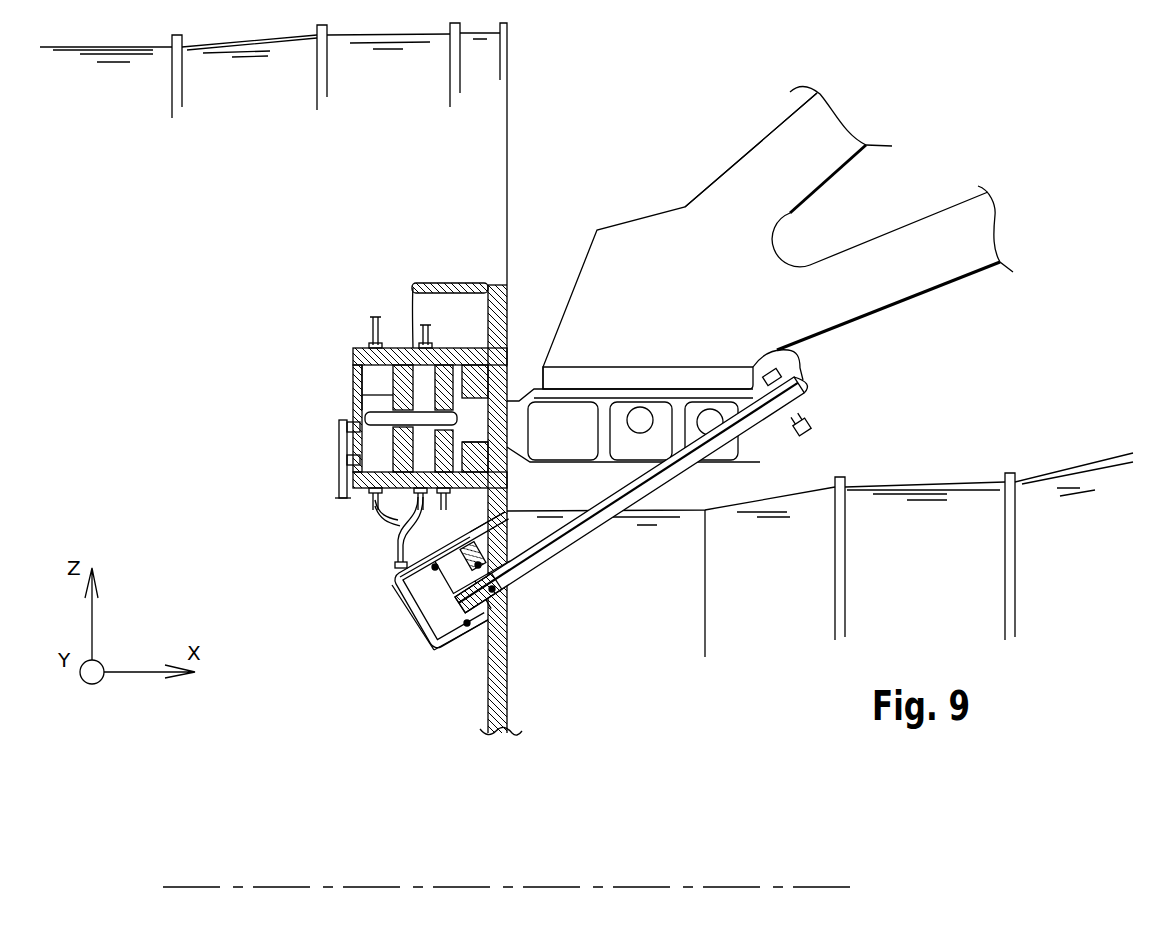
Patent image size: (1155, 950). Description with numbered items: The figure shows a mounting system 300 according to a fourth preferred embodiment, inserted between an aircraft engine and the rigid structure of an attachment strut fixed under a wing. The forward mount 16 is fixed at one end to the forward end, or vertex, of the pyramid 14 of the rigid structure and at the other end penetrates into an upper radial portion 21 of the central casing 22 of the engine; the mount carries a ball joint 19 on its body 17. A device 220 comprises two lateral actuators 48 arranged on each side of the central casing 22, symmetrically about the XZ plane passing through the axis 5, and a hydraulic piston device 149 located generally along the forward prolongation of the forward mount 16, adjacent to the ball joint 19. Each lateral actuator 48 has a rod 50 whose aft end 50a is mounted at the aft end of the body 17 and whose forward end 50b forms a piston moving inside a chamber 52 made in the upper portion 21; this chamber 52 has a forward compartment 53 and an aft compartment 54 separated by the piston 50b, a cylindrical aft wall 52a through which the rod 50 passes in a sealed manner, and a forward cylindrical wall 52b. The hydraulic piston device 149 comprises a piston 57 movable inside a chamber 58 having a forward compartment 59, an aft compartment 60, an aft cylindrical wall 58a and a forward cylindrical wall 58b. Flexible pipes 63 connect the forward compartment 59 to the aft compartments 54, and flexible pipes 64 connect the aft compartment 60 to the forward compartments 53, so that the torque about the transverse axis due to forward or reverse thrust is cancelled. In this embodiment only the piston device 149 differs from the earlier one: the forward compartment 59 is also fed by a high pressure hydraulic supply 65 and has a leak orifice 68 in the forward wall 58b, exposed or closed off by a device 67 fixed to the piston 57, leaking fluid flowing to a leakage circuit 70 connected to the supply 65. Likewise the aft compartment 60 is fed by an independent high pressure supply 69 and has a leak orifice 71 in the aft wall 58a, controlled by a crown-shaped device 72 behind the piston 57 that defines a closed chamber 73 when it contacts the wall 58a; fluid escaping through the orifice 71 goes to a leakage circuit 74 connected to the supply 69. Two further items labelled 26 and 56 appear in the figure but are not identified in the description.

The axis 5 is at (745, 806).
The pyramid 14 is at (645, 228).
The forward mount 16 is at (668, 380).
The body 17 is at (582, 437).
The ball joint 19 is at (500, 392).
The upper radial portion 21 is at (469, 282).
The central casing 22 is at (913, 518).
The water surface 26 is at (383, 62).
The lateral actuator 48 is at (412, 650).
The rod 50 is at (598, 530).
The aft end 50a is at (807, 393).
The forward end 50b is at (493, 652).
The chamber 52 is at (390, 597).
The cylindrical aft wall 52a is at (505, 592).
The forward cylindrical wall 52b is at (408, 625).
The forward compartment 53 is at (437, 650).
The aft compartment 54 is at (483, 623).
The hinge bracket 56 is at (793, 373).
The piston 57 is at (393, 513).
The chamber 58 is at (391, 398).
The aft cylindrical wall 58a is at (509, 285).
The forward cylindrical wall 58b is at (350, 368).
The forward compartment 59 is at (357, 492).
The aft compartment 60 is at (370, 385).
The flexible pipes 63 is at (373, 505).
The flexible pipes 64 is at (387, 560).
The high pressure hydraulic supply 65 is at (368, 332).
The device 67 is at (360, 395).
The leak orifice 68 is at (347, 440).
The high pressure hydraulic supply 69 is at (413, 288).
The leakage circuit 70 is at (343, 460).
The leak orifice 71 is at (465, 445).
The device 72 is at (430, 383).
The closed chamber 73 is at (503, 467).
The leakage circuit 74 is at (513, 568).
The hydraulic piston device 149 is at (395, 328).
The device 220 is at (662, 555).
The mounting system 300 is at (666, 118).